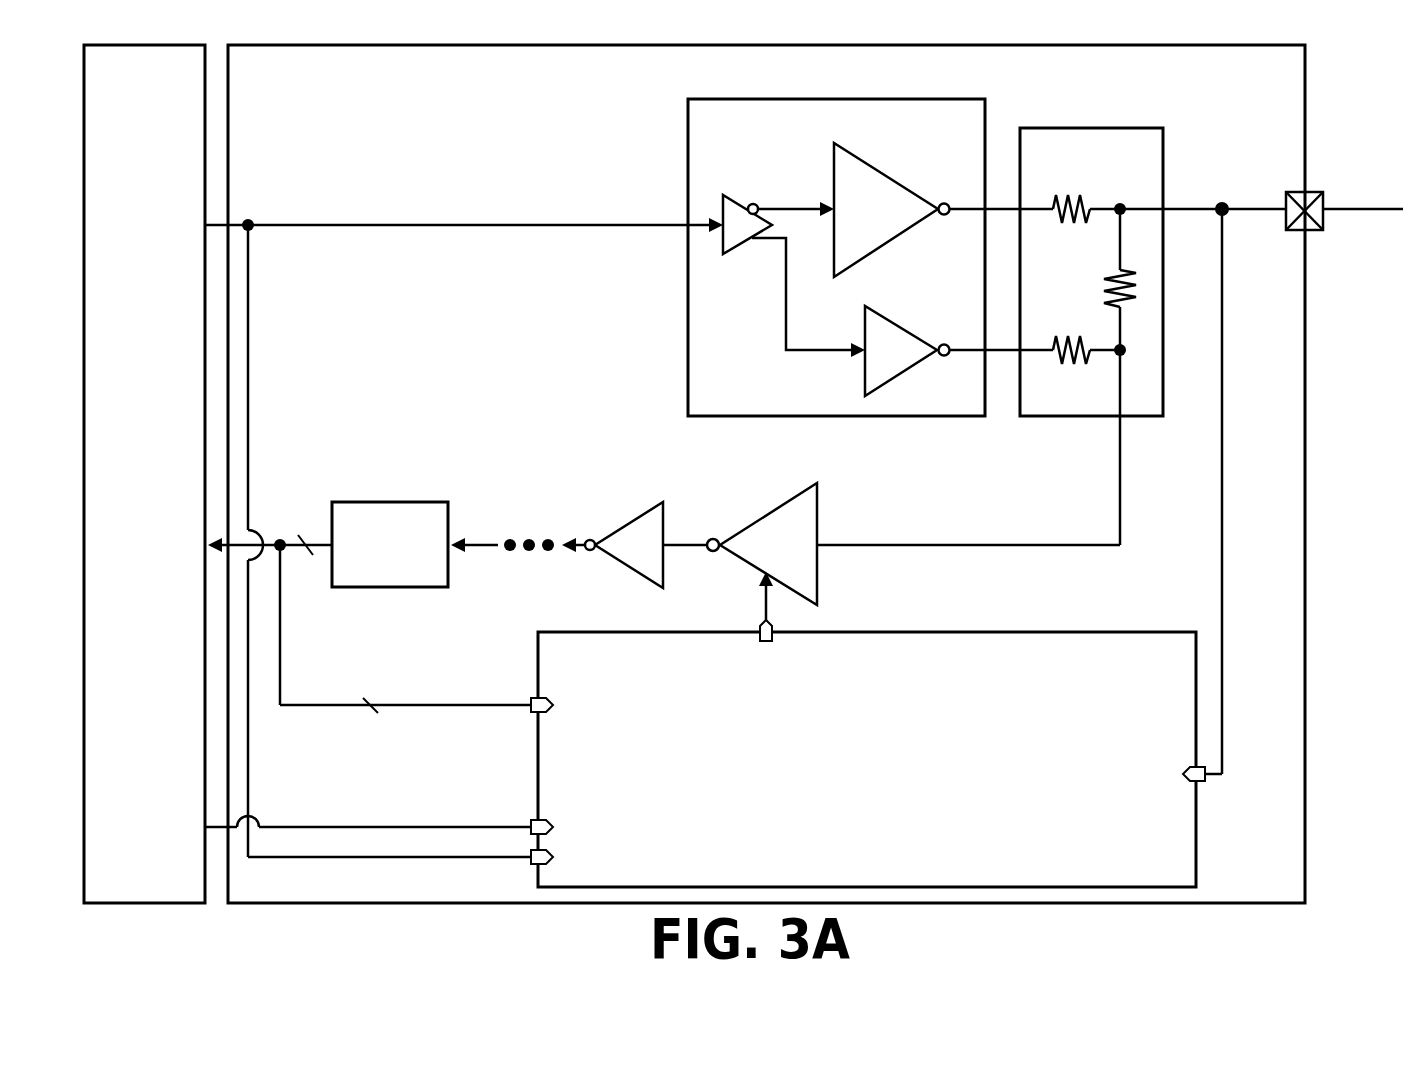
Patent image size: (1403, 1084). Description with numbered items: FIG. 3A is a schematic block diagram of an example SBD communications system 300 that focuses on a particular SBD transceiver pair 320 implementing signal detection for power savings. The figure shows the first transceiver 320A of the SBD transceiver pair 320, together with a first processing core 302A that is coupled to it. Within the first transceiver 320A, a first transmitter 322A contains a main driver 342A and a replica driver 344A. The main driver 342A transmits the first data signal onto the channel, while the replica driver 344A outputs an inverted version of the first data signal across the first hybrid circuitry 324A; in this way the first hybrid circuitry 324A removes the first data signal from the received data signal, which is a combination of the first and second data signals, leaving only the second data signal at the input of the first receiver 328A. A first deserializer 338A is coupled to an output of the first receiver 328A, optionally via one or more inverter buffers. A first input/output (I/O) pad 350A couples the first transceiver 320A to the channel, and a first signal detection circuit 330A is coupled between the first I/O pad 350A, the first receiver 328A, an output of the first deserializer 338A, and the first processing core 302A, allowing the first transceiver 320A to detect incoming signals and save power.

The SBD communications system 300 is at (1377, 82).
The first processing core 302A is at (120, 104).
The SBD transceiver pair 320 is at (1368, 503).
The first transceiver 320A is at (826, 79).
The first transmitter 322A is at (872, 133).
The first hybrid circuitry 324A is at (1145, 163).
The first receiver 328A is at (755, 522).
The first signal detection circuit 330A is at (1018, 770).
The first deserializer 338A is at (388, 502).
The main driver 342A is at (883, 172).
The replica driver 344A is at (900, 322).
The first input/output (I/O) pad 350A is at (1324, 192).